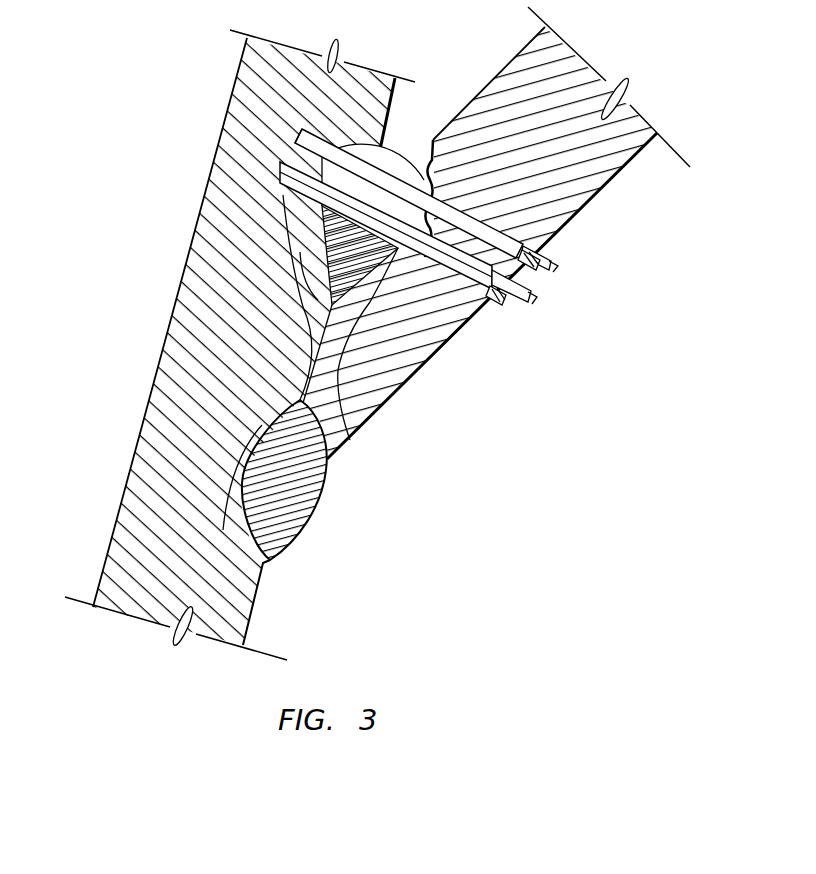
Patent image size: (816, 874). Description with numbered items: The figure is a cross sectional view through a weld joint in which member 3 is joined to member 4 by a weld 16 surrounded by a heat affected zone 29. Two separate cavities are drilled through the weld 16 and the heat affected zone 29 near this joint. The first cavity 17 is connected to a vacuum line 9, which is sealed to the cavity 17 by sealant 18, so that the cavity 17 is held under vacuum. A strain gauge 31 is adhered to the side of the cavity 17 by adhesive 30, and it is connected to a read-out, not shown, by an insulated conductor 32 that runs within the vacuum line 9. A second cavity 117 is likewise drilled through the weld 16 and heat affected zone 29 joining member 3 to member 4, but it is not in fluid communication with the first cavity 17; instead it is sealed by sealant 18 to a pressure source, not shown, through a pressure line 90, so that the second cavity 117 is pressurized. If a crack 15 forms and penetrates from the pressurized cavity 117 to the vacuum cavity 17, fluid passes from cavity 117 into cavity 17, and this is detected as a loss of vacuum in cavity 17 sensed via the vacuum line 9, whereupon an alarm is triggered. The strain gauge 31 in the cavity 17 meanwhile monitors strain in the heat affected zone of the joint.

The member 3 is at (605, 190).
The member 4 is at (233, 629).
The crack 15 is at (432, 183).
The cavity 17 is at (432, 288).
The second cavity 117 is at (448, 222).
The sealant 18 is at (558, 251).
The pressure line 90 is at (560, 266).
The vacuum line 9 is at (533, 305).
The heat affected zone 29 is at (300, 330).
The adhesive 30 is at (294, 190).
The weld 16 is at (336, 247).
The strain gauge 31 is at (414, 265).
The insulated conductor 32 is at (438, 316).